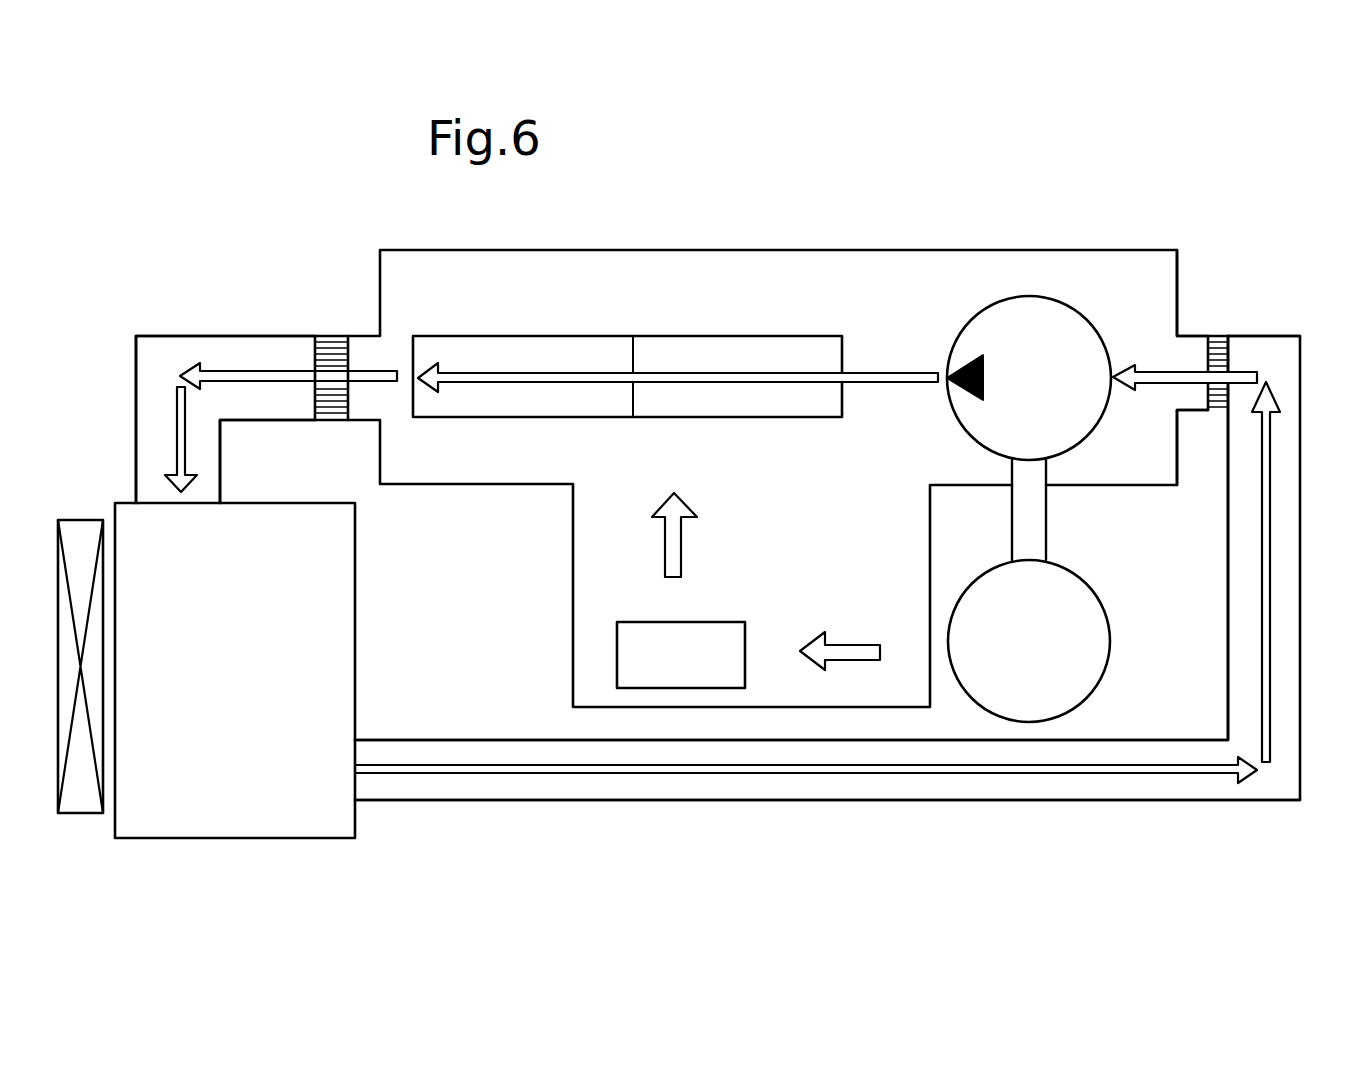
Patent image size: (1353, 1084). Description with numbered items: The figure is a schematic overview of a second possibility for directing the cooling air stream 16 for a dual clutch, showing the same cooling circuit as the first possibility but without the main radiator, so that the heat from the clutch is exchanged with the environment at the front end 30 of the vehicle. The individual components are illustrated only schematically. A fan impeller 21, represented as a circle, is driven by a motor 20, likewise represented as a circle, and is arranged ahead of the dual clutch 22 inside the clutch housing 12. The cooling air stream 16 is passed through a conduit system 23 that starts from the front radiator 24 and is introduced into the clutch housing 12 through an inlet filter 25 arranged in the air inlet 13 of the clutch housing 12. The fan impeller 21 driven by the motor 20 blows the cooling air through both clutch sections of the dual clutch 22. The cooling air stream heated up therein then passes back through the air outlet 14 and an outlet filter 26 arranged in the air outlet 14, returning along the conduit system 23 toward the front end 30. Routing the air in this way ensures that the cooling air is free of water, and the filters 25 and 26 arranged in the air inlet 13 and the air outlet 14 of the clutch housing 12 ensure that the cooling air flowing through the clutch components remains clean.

The clutch housing 12 is at (930, 263).
The air inlet 13 is at (1180, 345).
The air outlet 14 is at (277, 345).
The cooling air stream 16 is at (1265, 533).
The motor 20 is at (1048, 659).
The fan impeller 21 is at (1043, 393).
The dual clutch 22 is at (602, 358).
The conduit system 23 is at (1236, 625).
The front radiator 24 is at (78, 533).
The inlet filter 25 is at (1230, 357).
The outlet filter 26 is at (331, 352).
The front end 30 is at (222, 810).